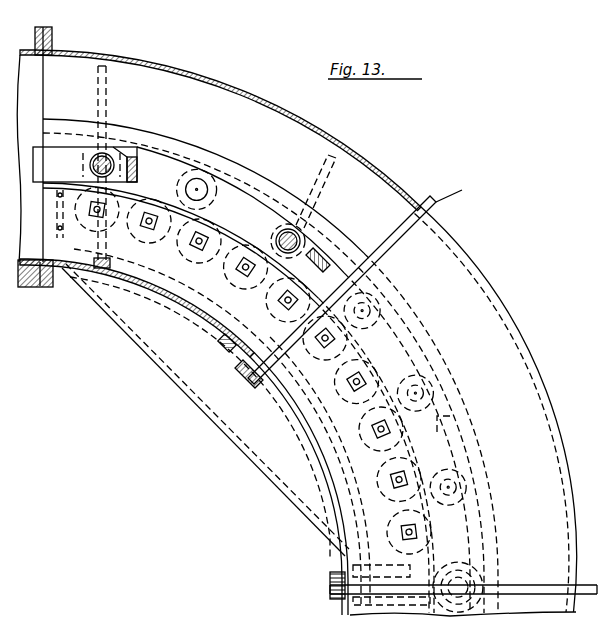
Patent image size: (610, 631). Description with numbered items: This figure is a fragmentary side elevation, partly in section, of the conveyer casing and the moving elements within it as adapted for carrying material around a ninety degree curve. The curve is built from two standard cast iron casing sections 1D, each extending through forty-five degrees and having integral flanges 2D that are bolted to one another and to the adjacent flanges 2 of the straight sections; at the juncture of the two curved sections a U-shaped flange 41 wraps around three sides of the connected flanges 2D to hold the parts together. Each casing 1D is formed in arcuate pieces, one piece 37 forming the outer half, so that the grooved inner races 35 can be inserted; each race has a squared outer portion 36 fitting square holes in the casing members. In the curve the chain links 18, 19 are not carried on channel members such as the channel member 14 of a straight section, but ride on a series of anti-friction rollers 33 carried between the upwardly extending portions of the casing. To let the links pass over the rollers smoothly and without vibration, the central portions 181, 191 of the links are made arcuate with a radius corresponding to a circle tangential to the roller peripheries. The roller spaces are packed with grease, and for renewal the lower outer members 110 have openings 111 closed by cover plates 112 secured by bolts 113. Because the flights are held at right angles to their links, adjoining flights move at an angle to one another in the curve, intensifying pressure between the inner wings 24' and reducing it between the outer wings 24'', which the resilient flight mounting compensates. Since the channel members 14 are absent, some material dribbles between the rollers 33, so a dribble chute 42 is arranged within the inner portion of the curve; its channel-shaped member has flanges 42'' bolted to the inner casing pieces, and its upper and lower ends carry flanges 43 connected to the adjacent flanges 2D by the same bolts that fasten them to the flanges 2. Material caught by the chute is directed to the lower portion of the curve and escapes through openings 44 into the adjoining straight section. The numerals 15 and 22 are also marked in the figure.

The cast iron casing section 1D is at (240, 91).
The flange of straight section 2 is at (35, 38).
The integral flange 2D is at (52, 38).
The channel member 14 is at (147, 42).
The direction arrow 15 is at (297, 567).
The chain link 18 is at (137, 160).
The chain link 19 is at (70, 150).
The bolt 22 is at (130, 160).
The inner wing of flight 24' is at (157, 311).
The outer wing of flight 24'' is at (232, 164).
The anti-friction roller 33 is at (150, 243).
The grooved inner race 35 is at (93, 213).
The squared outer portion 36 is at (137, 225).
The outer casing piece 37 is at (230, 270).
The U-shaped flange 41 is at (437, 204).
The dribble chute 42 is at (207, 406).
The flange of dribble chute 42'' is at (203, 412).
The end flange of dribble chute 43 is at (40, 288).
The opening 44 is at (377, 567).
The lower outer member 110 is at (312, 424).
The opening 111 is at (140, 290).
The cover plate 112 is at (175, 316).
The bolt 113 is at (200, 335).
The central portion of chain link 181 is at (165, 150).
The central portion of chain link 191 is at (230, 228).